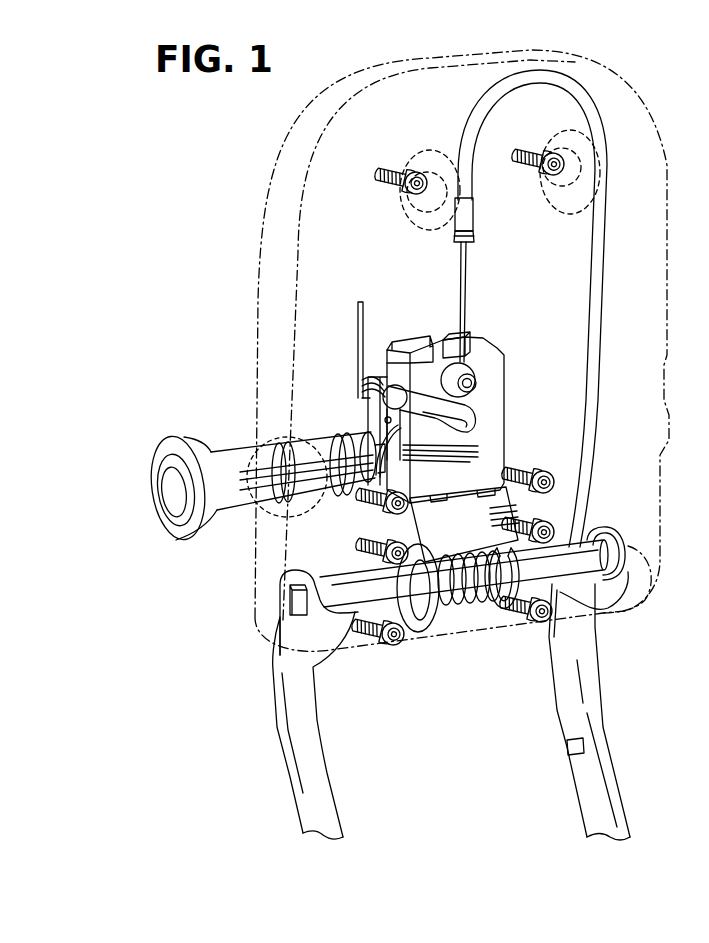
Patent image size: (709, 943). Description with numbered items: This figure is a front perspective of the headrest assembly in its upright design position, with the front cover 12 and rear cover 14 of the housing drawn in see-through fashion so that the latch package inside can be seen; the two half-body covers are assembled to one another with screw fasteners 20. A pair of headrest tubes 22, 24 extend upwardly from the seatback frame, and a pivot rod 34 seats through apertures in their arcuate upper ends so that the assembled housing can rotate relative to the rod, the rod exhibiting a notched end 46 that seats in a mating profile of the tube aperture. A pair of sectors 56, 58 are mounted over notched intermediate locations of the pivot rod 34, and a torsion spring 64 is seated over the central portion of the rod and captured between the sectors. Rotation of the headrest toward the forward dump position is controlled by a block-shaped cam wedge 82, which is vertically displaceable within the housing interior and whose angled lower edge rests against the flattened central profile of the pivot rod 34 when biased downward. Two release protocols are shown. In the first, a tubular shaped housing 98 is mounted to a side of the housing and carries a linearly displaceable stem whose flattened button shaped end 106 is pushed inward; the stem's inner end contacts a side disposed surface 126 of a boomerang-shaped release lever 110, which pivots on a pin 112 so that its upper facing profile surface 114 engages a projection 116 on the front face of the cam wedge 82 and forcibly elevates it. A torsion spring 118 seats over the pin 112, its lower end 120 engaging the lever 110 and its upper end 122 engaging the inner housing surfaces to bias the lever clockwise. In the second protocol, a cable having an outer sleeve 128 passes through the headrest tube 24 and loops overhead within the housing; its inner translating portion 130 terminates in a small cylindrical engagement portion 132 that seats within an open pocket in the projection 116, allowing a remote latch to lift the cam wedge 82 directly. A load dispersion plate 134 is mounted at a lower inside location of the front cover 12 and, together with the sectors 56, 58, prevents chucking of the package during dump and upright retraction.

The front cover 12 is at (370, 107).
The rear cover 14 is at (277, 183).
The screw fasteners 20 is at (515, 153).
The headrest tube 22 is at (328, 797).
The headrest tube 24 is at (583, 778).
The pivot rod 34 is at (343, 583).
The notched end 46 is at (290, 603).
The sector 56 is at (420, 620).
The sector 58 is at (493, 610).
The torsion spring 64 is at (520, 603).
The cam wedge 82 is at (487, 427).
The tubular shaped housing 98 is at (240, 452).
The button shaped end 106 is at (167, 487).
The release lever 110 is at (395, 425).
The pin 112 is at (391, 390).
The upper facing profile surface 114 is at (430, 363).
The projection 116 is at (478, 364).
The torsion spring 118 is at (360, 391).
The lower end 120 is at (396, 433).
The upper end 122 is at (357, 308).
The side disposed surface 126 is at (370, 431).
The outer sleeve 128 is at (563, 73).
The inner translating portion 130 is at (477, 262).
The engagement portion 132 is at (472, 383).
The load dispersion plate 134 is at (455, 534).